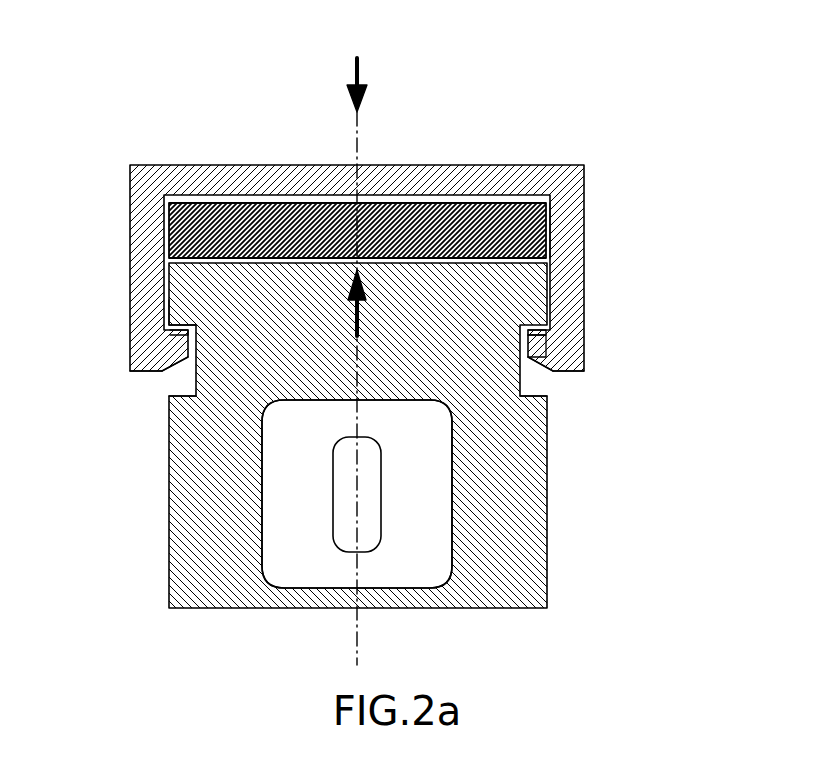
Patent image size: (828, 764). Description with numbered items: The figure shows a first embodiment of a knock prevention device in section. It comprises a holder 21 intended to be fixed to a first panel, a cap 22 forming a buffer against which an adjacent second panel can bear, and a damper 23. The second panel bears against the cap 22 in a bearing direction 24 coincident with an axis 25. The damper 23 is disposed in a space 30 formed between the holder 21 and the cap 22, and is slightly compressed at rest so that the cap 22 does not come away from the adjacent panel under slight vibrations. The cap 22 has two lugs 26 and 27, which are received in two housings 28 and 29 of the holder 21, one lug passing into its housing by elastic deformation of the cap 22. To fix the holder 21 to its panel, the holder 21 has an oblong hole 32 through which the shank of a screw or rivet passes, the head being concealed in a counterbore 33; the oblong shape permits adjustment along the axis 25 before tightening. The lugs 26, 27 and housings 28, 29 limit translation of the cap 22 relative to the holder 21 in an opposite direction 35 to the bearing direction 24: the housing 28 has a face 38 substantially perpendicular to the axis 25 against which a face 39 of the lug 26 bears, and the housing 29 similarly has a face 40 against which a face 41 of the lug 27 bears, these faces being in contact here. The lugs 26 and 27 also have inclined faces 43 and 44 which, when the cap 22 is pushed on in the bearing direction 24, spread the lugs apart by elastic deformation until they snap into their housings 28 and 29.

The holder 21 is at (527, 502).
The cap 22 is at (157, 178).
The damper 23 is at (472, 212).
The bearing direction 24 is at (362, 76).
The axis 25 is at (360, 143).
The lug 26 is at (552, 361).
The lug 27 is at (183, 344).
The housing 28 is at (538, 396).
The housing 29 is at (168, 396).
The space 30 is at (550, 222).
The hole 32 is at (332, 467).
The counterbore 33 is at (260, 553).
The opposite direction 35 is at (362, 313).
The face 38 is at (536, 330).
The face 39 is at (536, 343).
The face 40 is at (182, 327).
The face 41 is at (183, 338).
The inclined face 43 is at (557, 367).
The inclined face 44 is at (170, 361).